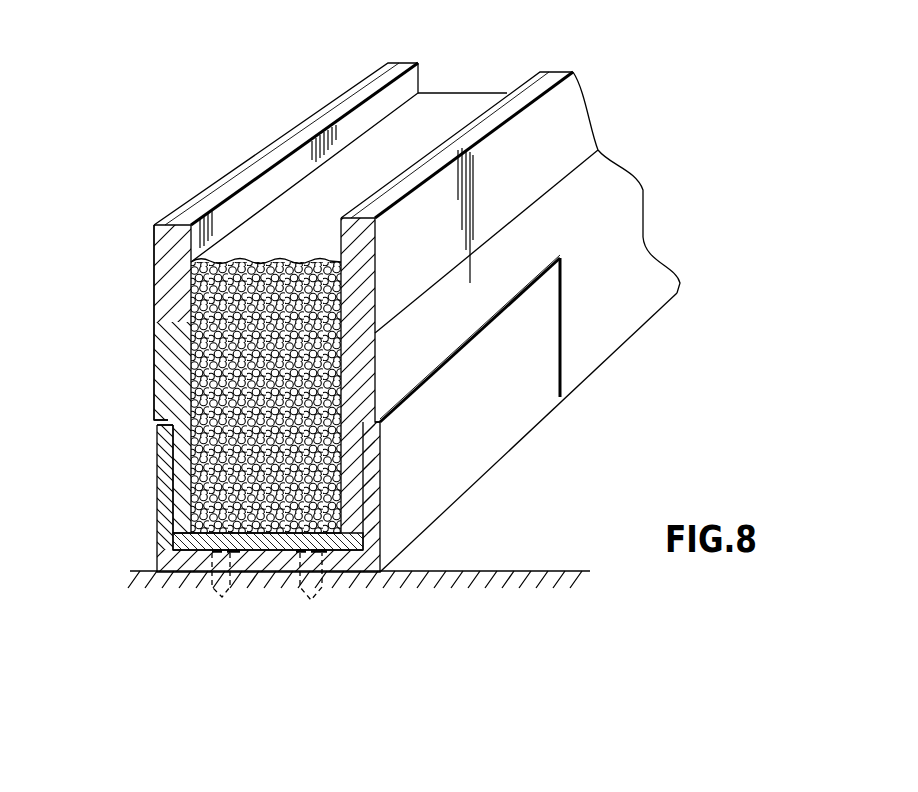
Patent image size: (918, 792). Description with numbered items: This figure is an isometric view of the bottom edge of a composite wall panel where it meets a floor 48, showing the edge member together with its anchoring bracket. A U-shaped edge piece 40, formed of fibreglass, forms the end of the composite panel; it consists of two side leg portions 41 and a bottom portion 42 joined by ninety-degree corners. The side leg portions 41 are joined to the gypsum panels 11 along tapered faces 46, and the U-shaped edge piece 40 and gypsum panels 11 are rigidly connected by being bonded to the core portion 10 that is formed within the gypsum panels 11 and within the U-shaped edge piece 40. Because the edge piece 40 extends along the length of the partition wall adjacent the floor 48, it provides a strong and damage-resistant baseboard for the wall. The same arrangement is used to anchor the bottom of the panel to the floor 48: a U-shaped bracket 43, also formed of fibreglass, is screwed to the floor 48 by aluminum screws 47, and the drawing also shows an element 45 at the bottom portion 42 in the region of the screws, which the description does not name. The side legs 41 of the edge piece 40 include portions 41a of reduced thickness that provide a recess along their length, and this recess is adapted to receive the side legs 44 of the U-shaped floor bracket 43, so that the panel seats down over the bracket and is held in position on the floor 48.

The core portion 10 is at (449, 106).
The gypsum panel 11 is at (308, 133).
The U-shaped edge piece 40 is at (156, 377).
The side leg portion 41 is at (160, 340).
The portion of reduced thickness 41a is at (177, 465).
The bottom portion 42 is at (287, 552).
The U-shaped bracket 43 is at (157, 435).
The side leg 44 is at (158, 506).
The heater 45 is at (200, 585).
The tapered face 46 is at (170, 322).
The aluminum screw 47 is at (231, 598).
The floor 48 is at (535, 573).